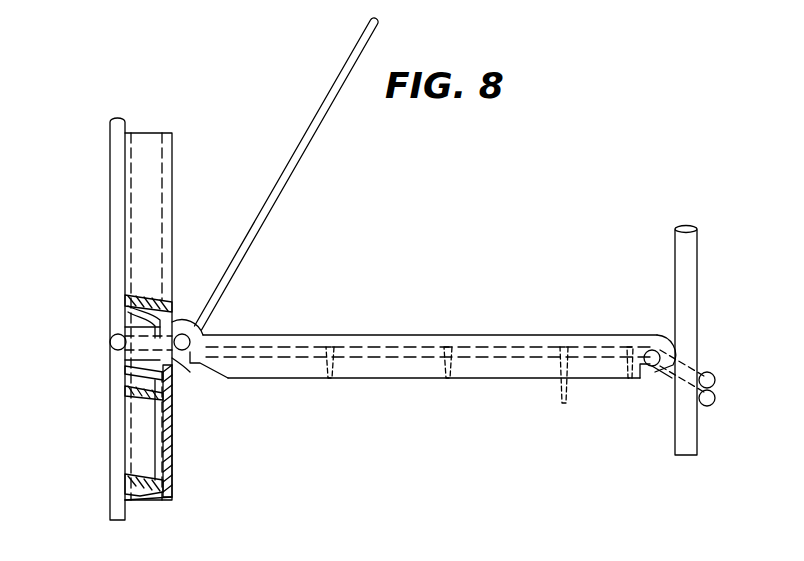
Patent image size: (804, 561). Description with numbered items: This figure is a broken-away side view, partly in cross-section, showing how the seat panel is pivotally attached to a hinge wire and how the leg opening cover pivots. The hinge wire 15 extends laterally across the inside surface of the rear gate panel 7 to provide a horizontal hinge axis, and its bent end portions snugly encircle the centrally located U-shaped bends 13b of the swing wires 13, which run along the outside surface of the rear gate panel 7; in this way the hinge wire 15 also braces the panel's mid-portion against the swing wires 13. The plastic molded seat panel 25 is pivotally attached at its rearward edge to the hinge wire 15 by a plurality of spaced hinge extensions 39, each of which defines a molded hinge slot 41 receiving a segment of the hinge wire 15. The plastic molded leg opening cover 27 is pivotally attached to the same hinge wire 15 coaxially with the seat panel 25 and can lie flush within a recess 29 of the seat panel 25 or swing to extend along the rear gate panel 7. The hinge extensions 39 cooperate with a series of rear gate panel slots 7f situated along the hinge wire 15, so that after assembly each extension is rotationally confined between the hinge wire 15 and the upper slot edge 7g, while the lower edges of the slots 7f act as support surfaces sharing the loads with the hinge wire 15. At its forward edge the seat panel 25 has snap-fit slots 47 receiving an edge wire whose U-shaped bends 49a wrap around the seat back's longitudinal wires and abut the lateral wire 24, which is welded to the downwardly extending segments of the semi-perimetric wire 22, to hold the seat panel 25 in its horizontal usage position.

The rear gate panel 7 is at (176, 455).
The rear gate panel slots 7f is at (130, 325).
The upper slot edge 7g is at (178, 366).
The swing wires 13 is at (110, 152).
The U-shaped bends 13b is at (125, 330).
The hinge wire 15 is at (118, 350).
The semi-perimetric wire 22 is at (697, 281).
The lateral wire 24 is at (715, 399).
The seat panel 25 is at (592, 335).
The leg opening cover 27 is at (302, 152).
The recess 29 is at (562, 400).
The hinge extensions 39 is at (184, 320).
The hinge slot 41 is at (185, 360).
The snap-fit slots 47 is at (650, 370).
The U-shaped bends 49a is at (714, 378).